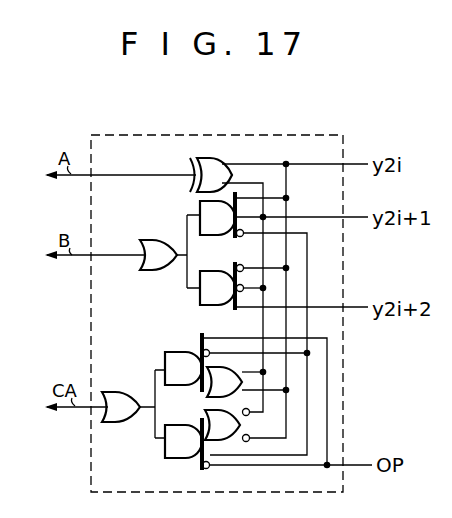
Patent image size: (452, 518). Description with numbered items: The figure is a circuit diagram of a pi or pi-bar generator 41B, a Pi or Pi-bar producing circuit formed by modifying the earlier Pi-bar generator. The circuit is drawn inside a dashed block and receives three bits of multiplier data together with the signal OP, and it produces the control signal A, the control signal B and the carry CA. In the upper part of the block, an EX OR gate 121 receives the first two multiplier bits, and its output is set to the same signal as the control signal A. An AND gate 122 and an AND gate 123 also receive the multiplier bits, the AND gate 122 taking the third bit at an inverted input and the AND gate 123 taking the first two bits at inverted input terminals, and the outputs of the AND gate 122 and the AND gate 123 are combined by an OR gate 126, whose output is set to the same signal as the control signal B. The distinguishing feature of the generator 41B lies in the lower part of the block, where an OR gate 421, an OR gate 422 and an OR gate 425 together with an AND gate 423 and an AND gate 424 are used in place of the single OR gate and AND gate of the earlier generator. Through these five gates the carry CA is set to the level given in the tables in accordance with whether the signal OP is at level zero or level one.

The pi or pi-bar generator 41B is at (236, 134).
The EX OR gate 121 is at (232, 157).
The AND gate 122 is at (200, 205).
The AND gate 123 is at (215, 307).
The OR gate 126 is at (160, 272).
The OR gate 421 is at (208, 393).
The OR gate 422 is at (232, 443).
The AND gate 423 is at (175, 353).
The AND gate 424 is at (172, 460).
The OR gate 425 is at (120, 423).